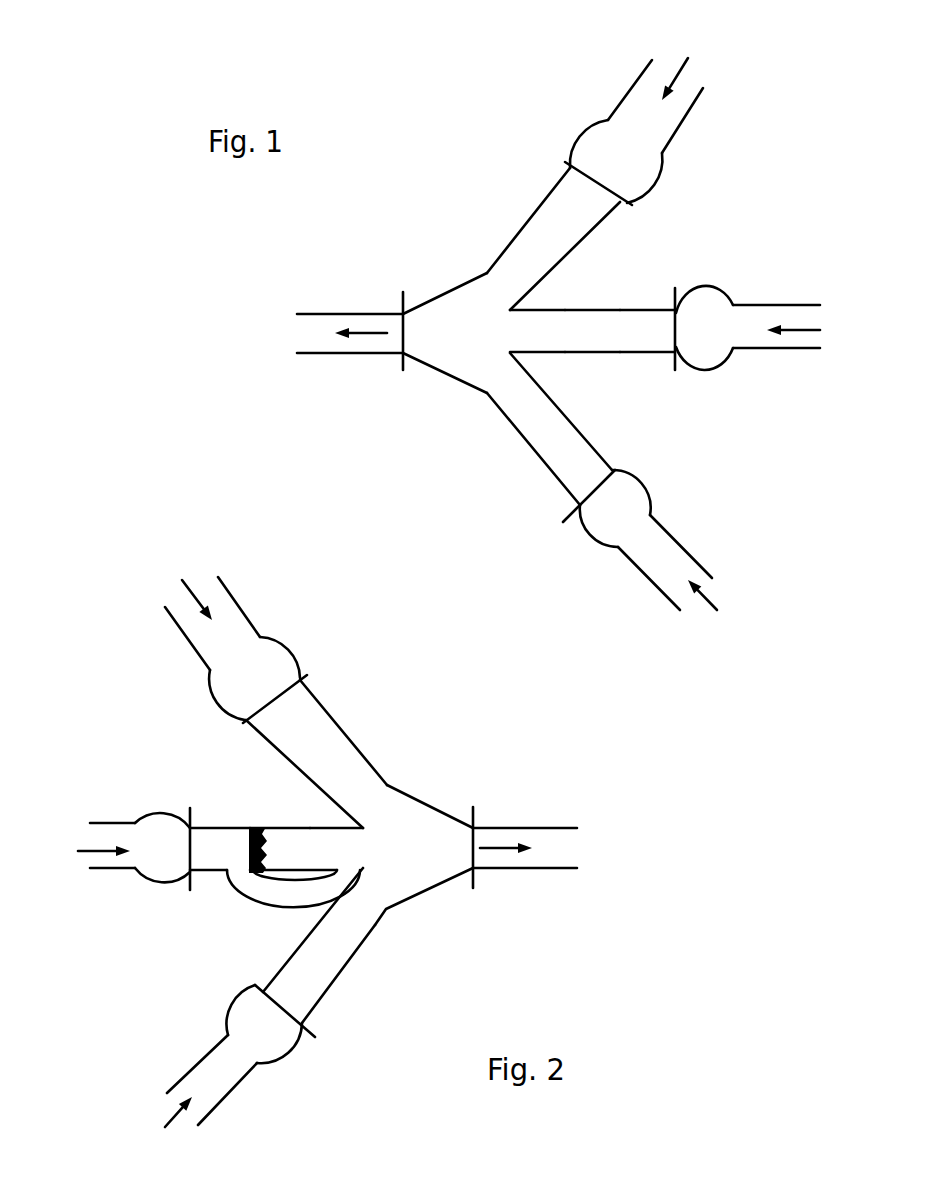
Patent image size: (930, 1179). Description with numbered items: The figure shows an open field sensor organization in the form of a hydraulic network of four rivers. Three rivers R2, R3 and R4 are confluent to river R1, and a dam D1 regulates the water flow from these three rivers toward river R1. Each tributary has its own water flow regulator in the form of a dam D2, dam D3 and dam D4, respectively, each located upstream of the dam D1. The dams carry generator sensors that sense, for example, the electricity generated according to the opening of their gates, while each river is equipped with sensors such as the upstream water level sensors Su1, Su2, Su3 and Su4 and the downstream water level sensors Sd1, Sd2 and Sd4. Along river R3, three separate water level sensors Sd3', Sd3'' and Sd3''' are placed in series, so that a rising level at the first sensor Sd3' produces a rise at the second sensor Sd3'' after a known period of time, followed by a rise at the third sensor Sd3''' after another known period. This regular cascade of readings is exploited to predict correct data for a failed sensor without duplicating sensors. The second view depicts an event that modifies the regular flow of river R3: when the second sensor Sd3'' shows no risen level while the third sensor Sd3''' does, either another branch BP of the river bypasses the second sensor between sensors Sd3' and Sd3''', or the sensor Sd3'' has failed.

In FIG. 1, the river R1 is at (323, 333).
In FIG. 2, the river R1 is at (549, 848).
In FIG. 1, the river R2 is at (662, 91).
In FIG. 2, the river R2 is at (205, 607).
In FIG. 1, the river R3 is at (795, 326).
In FIG. 2, the river R3 is at (86, 845).
In FIG. 1, the river R4 is at (684, 582).
In FIG. 2, the river R4 is at (194, 1097).
In FIG. 1, the dam D1 is at (403, 316).
In FIG. 2, the dam D1 is at (459, 831).
In FIG. 1, the dam D2 is at (576, 169).
In FIG. 2, the dam D2 is at (291, 687).
In FIG. 1, the dam D3 is at (669, 316).
In FIG. 2, the dam D3 is at (188, 834).
In FIG. 1, the dam D4 is at (602, 479).
In FIG. 2, the dam D4 is at (272, 999).
In FIG. 1, the upstream water level sensor Su1 is at (445, 333).
In FIG. 2, the upstream water level sensor Su1 is at (424, 855).
In FIG. 1, the upstream water level sensor Su2 is at (616, 161).
In FIG. 2, the upstream water level sensor Su2 is at (254, 678).
In FIG. 1, the upstream water level sensor Su3 is at (704, 328).
In FIG. 2, the upstream water level sensor Su3 is at (162, 847).
In FIG. 1, the upstream water level sensor Su4 is at (615, 508).
In FIG. 2, the upstream water level sensor Su4 is at (264, 1024).
In FIG. 1, the downstream water level sensor Sd1 is at (339, 335).
In FIG. 2, the downstream water level sensor Sd1 is at (526, 850).
In FIG. 1, the downstream water level sensor Sd2 is at (553, 239).
In FIG. 2, the downstream water level sensor Sd2 is at (316, 754).
In FIG. 1, the first water level sensor Sd3' is at (647, 331).
In FIG. 2, the first water level sensor Sd3' is at (228, 850).
In FIG. 1, the second water level sensor Sd3'' is at (590, 331).
In FIG. 2, the second water level sensor Sd3'' is at (293, 849).
In FIG. 1, the third water level sensor Sd3''' is at (525, 331).
In FIG. 2, the third water level sensor Sd3''' is at (351, 846).
In FIG. 1, the downstream water level sensor Sd4 is at (549, 429).
In FIG. 2, the downstream water level sensor Sd4 is at (319, 945).
In FIG. 2, the branch BP is at (293, 888).